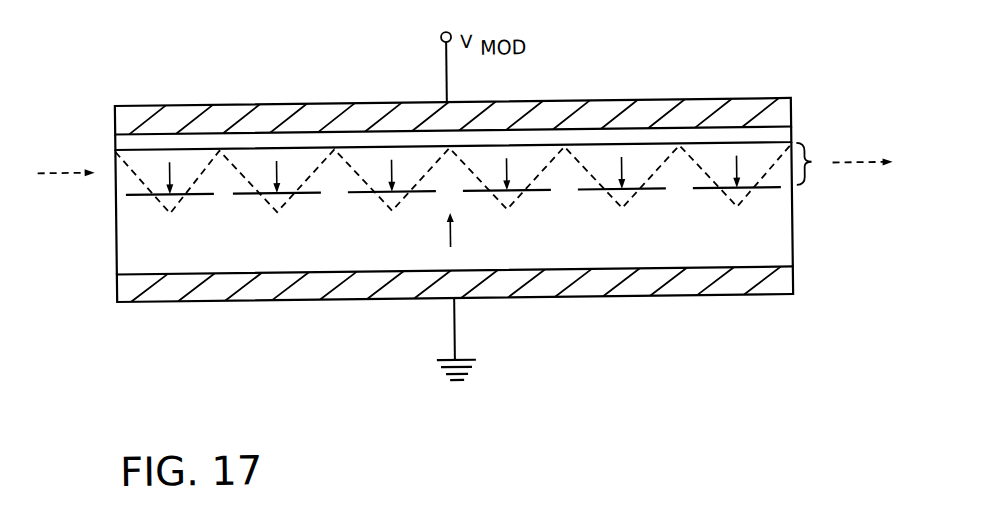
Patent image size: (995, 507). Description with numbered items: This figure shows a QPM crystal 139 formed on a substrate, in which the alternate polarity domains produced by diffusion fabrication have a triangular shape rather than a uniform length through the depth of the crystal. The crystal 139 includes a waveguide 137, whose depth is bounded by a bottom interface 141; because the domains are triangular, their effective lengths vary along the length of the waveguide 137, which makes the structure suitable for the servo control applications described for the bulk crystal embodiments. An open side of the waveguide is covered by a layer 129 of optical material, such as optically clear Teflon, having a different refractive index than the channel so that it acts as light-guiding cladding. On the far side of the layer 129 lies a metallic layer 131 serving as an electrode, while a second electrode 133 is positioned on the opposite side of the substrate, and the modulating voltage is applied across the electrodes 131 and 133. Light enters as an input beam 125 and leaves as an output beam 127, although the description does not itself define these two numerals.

The input light beam 125 is at (63, 168).
The output light beam 127 is at (846, 172).
The layer 129 is at (778, 140).
The metallic layer 131 is at (602, 110).
The second electrode 133 is at (682, 290).
The waveguide 137 is at (813, 166).
The crystal 139 is at (110, 149).
The bottom interface 141 is at (779, 192).